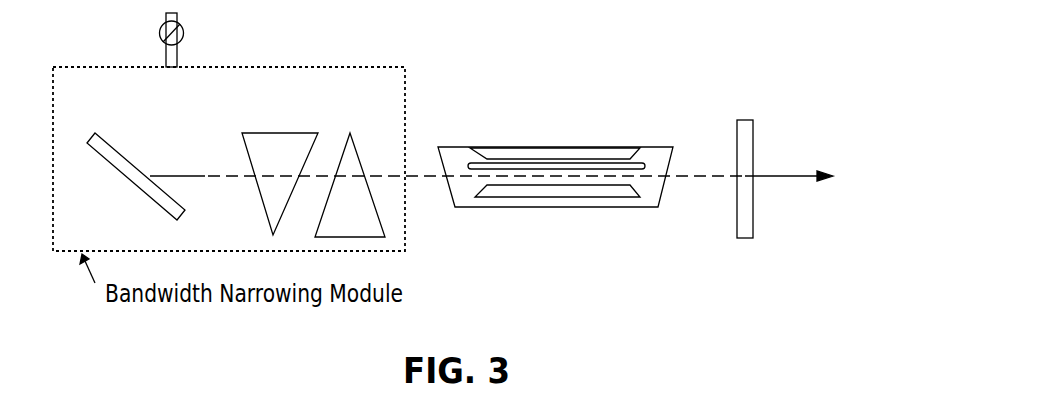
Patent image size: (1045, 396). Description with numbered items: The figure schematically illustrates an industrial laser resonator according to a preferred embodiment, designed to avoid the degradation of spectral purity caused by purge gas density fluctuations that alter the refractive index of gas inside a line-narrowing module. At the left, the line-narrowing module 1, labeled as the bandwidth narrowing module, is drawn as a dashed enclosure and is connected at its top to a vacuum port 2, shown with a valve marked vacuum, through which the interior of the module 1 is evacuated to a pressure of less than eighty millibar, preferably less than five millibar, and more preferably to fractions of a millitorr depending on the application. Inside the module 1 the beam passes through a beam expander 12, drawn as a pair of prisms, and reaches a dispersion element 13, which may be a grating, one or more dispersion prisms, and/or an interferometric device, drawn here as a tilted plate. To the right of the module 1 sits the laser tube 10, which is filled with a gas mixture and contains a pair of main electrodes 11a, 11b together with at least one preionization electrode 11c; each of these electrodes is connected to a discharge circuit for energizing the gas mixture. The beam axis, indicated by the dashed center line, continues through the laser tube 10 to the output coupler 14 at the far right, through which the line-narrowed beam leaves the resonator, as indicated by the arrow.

The line-narrowing module 1 is at (308, 67).
The vacuum port 2 is at (167, 63).
The laser tube 10 is at (532, 138).
The main electrode 11a is at (615, 153).
The main electrode 11b is at (600, 198).
The preionization electrode 11c is at (470, 164).
The beam expander 12 is at (350, 133).
The dispersion element 13 is at (111, 147).
The output coupler 14 is at (747, 120).